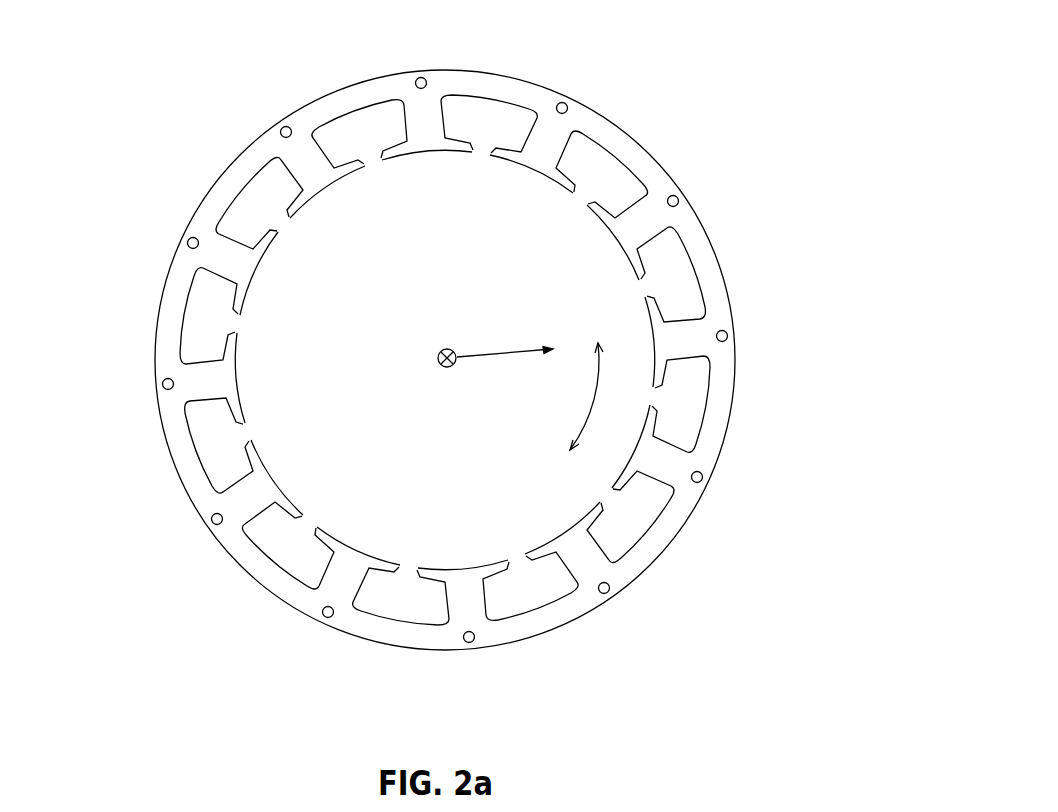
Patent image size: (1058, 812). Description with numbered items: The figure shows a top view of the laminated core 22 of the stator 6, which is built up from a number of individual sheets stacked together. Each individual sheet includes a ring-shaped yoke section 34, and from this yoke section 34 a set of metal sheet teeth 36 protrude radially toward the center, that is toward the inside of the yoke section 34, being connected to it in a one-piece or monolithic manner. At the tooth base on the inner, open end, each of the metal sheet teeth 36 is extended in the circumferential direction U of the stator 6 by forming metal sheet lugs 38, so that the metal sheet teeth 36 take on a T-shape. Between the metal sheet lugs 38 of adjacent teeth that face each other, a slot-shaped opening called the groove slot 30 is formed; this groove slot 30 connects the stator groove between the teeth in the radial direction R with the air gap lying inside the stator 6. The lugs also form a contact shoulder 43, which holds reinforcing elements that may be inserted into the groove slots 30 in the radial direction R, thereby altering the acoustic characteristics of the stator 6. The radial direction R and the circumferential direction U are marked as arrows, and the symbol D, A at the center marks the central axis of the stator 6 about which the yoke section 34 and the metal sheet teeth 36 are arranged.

The stator 6 is at (501, 326).
The laminated core 22 is at (483, 360).
The groove slot 30 is at (280, 223).
The yoke section 34 is at (718, 412).
The metal sheet teeth 36 is at (212, 385).
The metal sheet lugs 38 is at (395, 150).
The contact shoulder 43 is at (592, 205).
The radial direction R is at (508, 350).
The circumferential direction U is at (590, 405).
The rotation axis D is at (426, 392).
The axial direction A is at (444, 368).